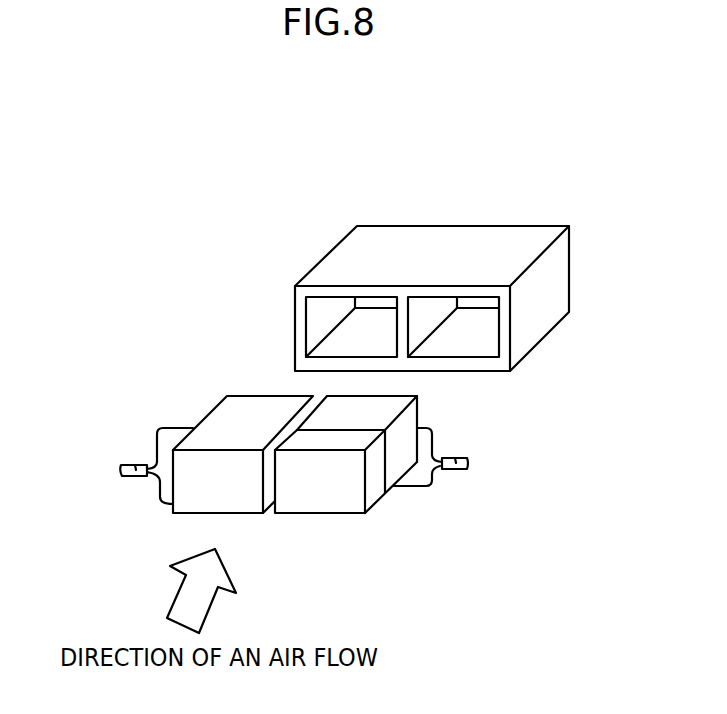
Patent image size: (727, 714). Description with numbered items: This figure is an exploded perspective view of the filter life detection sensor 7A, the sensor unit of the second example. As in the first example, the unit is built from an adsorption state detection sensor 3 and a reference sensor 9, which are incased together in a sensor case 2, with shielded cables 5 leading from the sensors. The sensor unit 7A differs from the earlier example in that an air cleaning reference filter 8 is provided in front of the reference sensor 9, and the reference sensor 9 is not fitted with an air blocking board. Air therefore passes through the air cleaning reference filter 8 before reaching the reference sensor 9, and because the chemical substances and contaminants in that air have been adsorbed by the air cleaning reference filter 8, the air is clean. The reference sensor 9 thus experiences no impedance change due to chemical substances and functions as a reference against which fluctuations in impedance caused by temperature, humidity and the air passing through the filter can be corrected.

The sensor case 2 is at (407, 238).
The filter life detection sensor 7A is at (185, 253).
The adsorption state detection sensor 3 is at (232, 417).
The shielded cables 5 is at (132, 463).
The air cleaning reference filter 8 is at (327, 500).
The reference sensor 9 is at (412, 408).